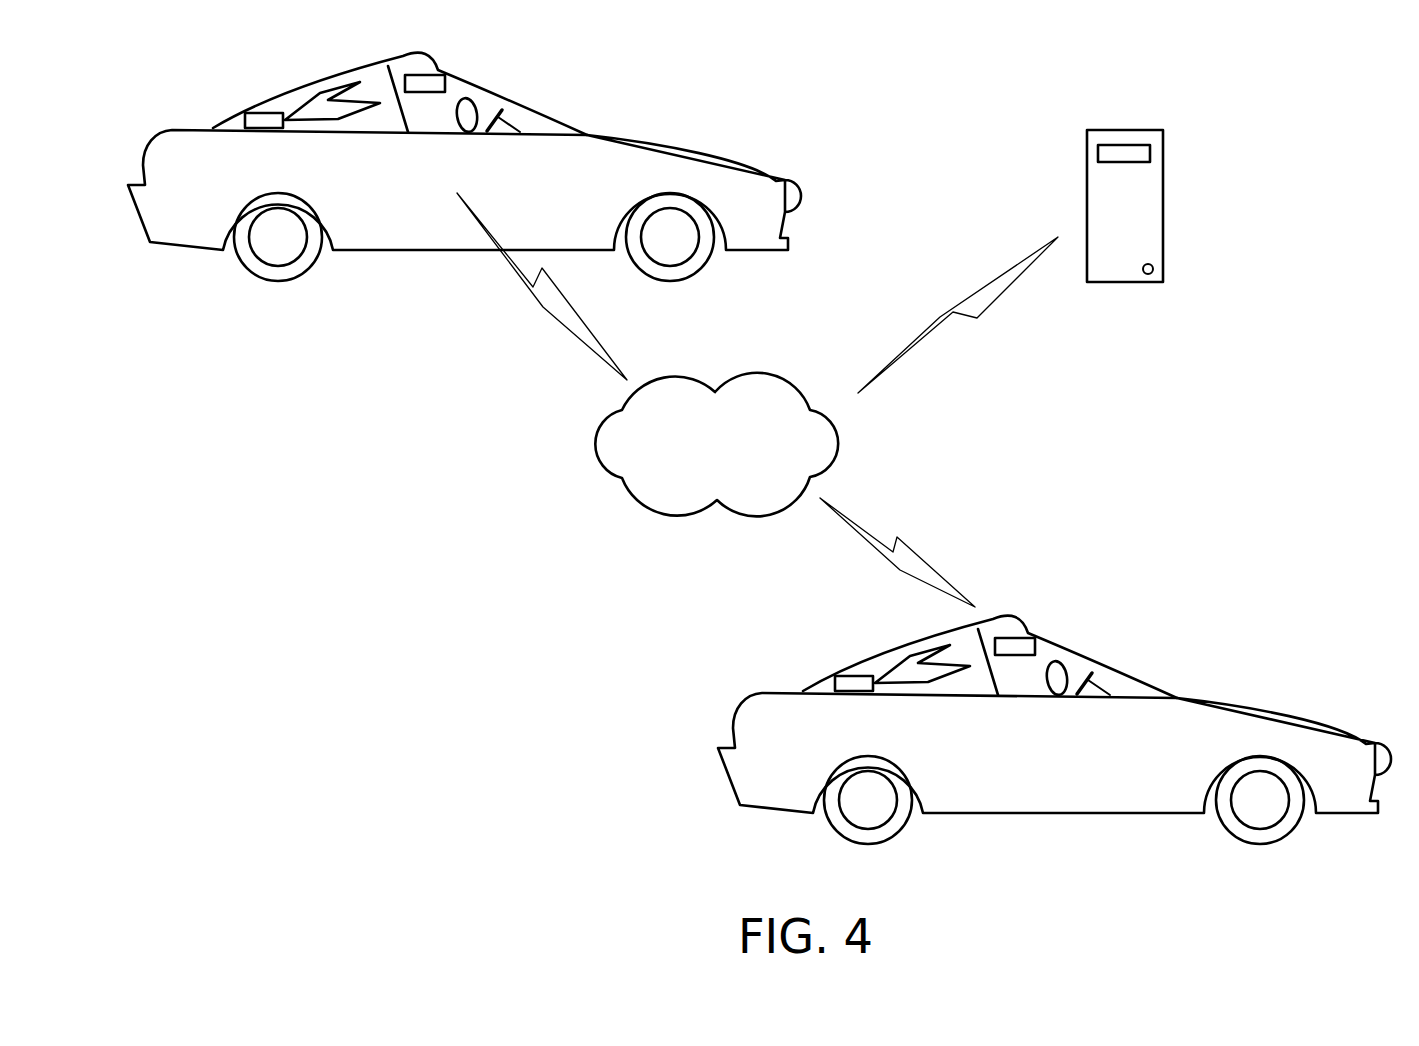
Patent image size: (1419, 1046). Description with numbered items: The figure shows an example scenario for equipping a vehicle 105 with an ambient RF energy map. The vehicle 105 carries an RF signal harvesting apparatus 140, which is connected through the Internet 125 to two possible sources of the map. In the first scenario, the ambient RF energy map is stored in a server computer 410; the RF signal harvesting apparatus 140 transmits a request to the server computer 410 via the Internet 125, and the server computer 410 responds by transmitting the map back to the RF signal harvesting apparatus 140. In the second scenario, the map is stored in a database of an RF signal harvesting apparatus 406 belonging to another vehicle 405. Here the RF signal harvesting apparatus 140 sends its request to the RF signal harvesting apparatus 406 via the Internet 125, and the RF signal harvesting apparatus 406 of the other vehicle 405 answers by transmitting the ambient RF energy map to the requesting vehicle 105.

The another vehicle 405 is at (464, 161).
The RF signal harvesting apparatus 406 is at (408, 93).
The server computer 410 is at (1064, 139).
The Internet 125 is at (791, 421).
The vehicle 105 is at (1063, 724).
The RF signal harvesting apparatus 140 is at (1019, 662).